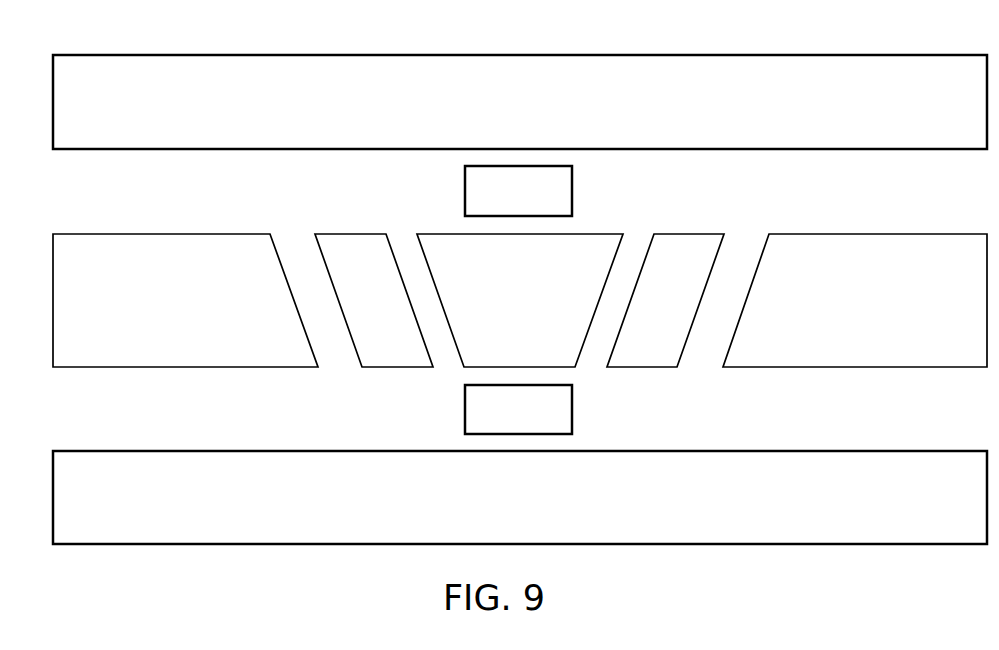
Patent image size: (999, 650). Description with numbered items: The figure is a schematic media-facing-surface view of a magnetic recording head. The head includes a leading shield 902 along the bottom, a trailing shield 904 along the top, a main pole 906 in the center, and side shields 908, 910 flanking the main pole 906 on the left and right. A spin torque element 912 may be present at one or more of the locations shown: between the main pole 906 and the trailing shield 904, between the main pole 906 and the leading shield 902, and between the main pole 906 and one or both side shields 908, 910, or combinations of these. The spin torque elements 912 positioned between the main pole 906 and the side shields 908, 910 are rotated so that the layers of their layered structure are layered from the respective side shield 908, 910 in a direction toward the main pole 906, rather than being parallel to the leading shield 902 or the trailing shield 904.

The leading shield 902 is at (497, 511).
The trailing shield 904 is at (498, 115).
The main pole 906 is at (497, 310).
The side shield 908 is at (163, 312).
The side shield 910 is at (835, 310).
The spin torque element 912 is at (498, 205).